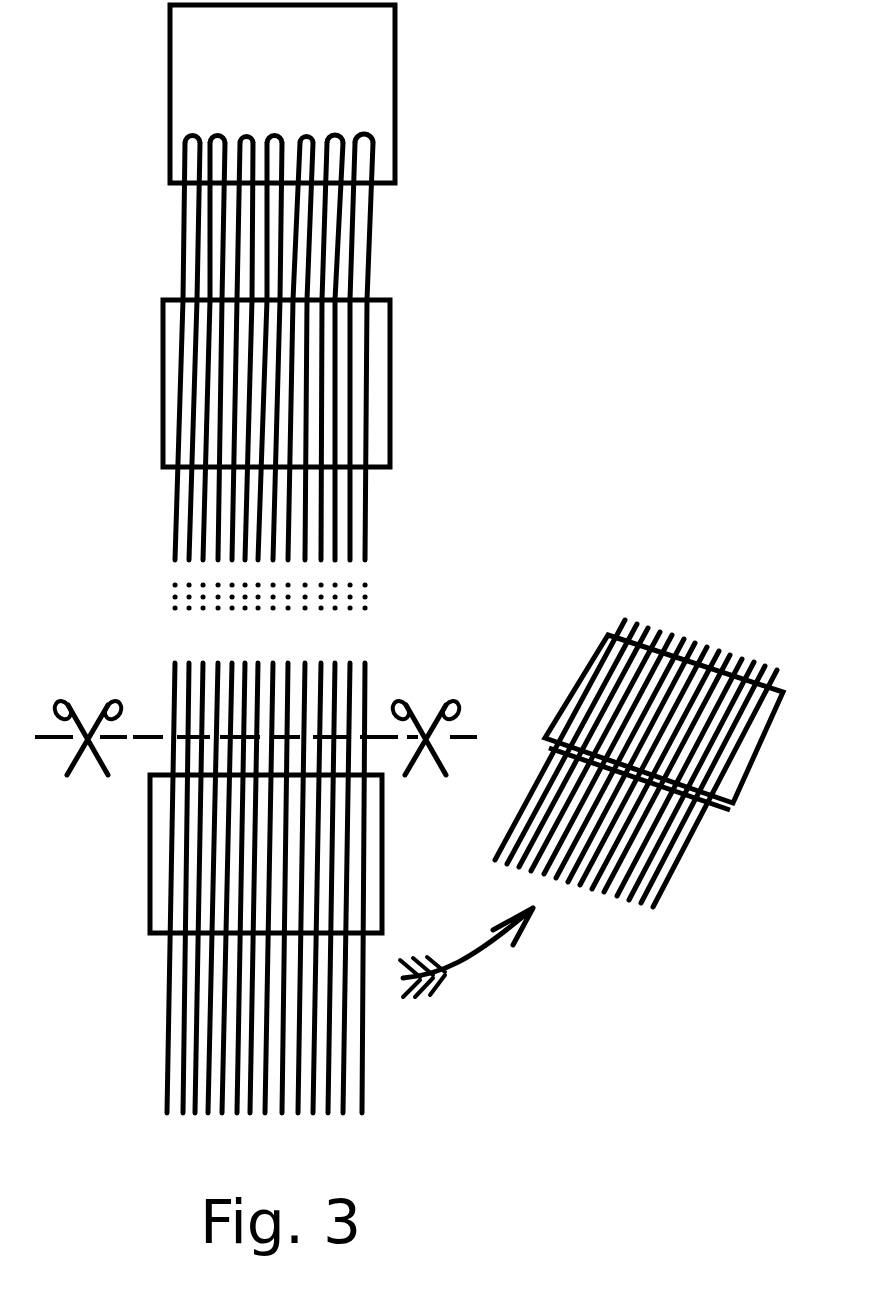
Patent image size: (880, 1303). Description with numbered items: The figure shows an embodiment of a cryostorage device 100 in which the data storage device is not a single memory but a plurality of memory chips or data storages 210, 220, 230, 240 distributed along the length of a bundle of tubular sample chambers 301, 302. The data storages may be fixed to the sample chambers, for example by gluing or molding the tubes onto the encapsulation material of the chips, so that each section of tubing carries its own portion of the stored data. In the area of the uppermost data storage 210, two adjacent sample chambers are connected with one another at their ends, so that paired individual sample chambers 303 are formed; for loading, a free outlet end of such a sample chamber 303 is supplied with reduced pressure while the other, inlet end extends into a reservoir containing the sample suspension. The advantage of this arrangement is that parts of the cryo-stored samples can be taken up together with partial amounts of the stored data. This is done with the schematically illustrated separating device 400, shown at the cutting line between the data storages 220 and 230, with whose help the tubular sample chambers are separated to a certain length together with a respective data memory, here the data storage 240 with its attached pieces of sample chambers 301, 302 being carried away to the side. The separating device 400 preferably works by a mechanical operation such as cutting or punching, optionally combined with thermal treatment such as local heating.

The cryostorage device 100 is at (513, 478).
The data storage 210 is at (170, 130).
The data storage 220 is at (163, 435).
The data storage 230 is at (150, 892).
The data storage 240 is at (767, 748).
The sample chamber 301 is at (363, 1097).
The sample chamber 302 is at (346, 1105).
The individual sample chamber 303 is at (325, 1095).
The separating device 400 is at (540, 624).